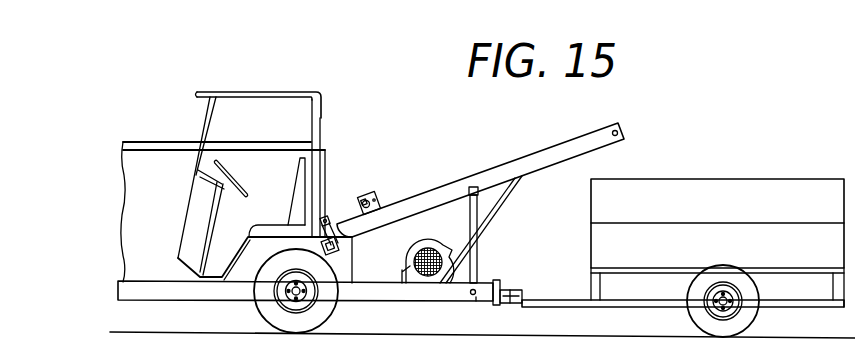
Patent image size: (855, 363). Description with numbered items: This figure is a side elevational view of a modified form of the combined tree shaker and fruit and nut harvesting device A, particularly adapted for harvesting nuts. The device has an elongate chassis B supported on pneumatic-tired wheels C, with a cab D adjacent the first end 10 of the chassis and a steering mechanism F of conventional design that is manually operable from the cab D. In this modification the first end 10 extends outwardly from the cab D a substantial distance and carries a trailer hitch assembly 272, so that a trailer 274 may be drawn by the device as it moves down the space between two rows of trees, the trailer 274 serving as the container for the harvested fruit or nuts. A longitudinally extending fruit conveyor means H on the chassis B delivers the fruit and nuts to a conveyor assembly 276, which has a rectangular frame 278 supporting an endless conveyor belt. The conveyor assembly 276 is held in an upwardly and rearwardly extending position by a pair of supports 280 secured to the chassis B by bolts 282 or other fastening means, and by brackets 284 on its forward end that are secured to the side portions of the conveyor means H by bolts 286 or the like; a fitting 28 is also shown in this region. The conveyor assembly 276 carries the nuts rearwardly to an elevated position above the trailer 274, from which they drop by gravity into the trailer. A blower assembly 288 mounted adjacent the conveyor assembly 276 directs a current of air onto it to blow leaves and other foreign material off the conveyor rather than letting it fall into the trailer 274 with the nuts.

The first end 10 is at (477, 303).
The coupling fitting 28 is at (381, 200).
The trailer hitch assembly 272 is at (503, 289).
The trailer 274 is at (733, 218).
The conveyor assembly 276 is at (500, 166).
The rectangular frame 278 is at (410, 212).
The supports 280 is at (480, 234).
The bolts 282 is at (470, 295).
The brackets 284 is at (331, 253).
The bolts 286 is at (323, 211).
The blower assembly 288 is at (407, 275).
The combined tree shaker and fruit and nut harvesting device A is at (178, 301).
The chassis B is at (142, 288).
The pneumatic-tired wheels C is at (287, 323).
The cab D is at (277, 83).
The steering mechanism F is at (220, 191).
The fruit conveyor means H is at (352, 208).